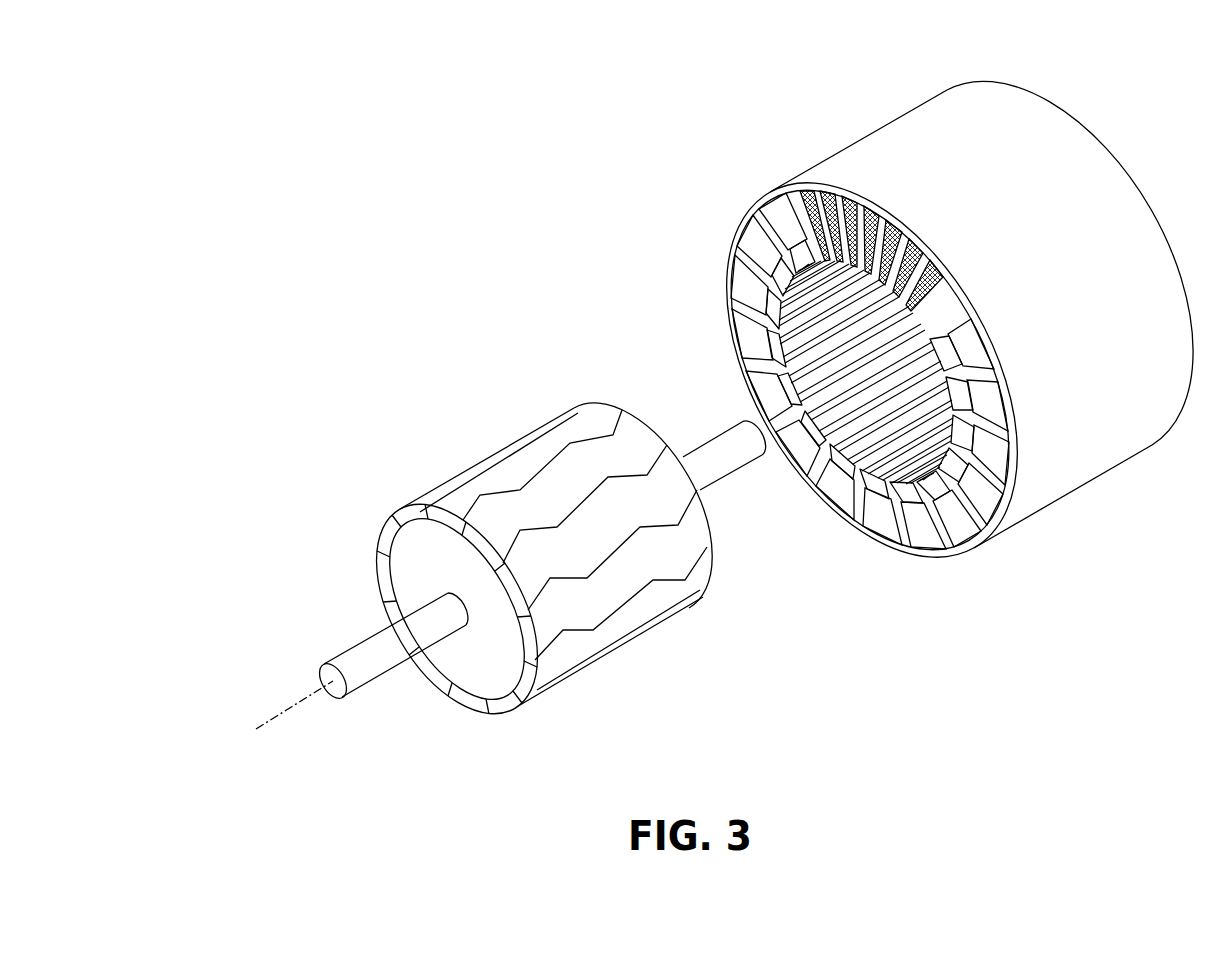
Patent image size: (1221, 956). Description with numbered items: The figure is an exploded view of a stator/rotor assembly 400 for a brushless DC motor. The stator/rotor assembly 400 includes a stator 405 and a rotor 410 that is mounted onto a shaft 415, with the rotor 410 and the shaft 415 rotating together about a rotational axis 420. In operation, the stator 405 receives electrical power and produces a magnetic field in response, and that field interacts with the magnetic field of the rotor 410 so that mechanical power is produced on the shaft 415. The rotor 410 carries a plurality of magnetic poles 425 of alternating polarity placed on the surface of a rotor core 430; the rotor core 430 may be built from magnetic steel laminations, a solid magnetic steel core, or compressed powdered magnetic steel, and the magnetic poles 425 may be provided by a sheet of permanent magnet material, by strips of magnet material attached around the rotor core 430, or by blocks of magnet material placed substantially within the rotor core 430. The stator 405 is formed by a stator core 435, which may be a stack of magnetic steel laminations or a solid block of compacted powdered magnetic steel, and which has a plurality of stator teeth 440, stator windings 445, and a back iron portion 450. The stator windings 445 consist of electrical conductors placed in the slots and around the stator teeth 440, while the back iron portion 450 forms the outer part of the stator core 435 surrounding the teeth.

The stator/rotor assembly 400 is at (476, 264).
The stator 405 is at (1096, 96).
The rotor 410 is at (600, 707).
The shaft 415 is at (323, 667).
The rotational axis 420 is at (256, 729).
The magnetic poles 425 is at (462, 496).
The rotor core 430 is at (470, 668).
The stator core 435 is at (882, 132).
The stator teeth 440 is at (875, 237).
The stator windings 445 is at (900, 292).
The back iron portion 450 is at (984, 341).